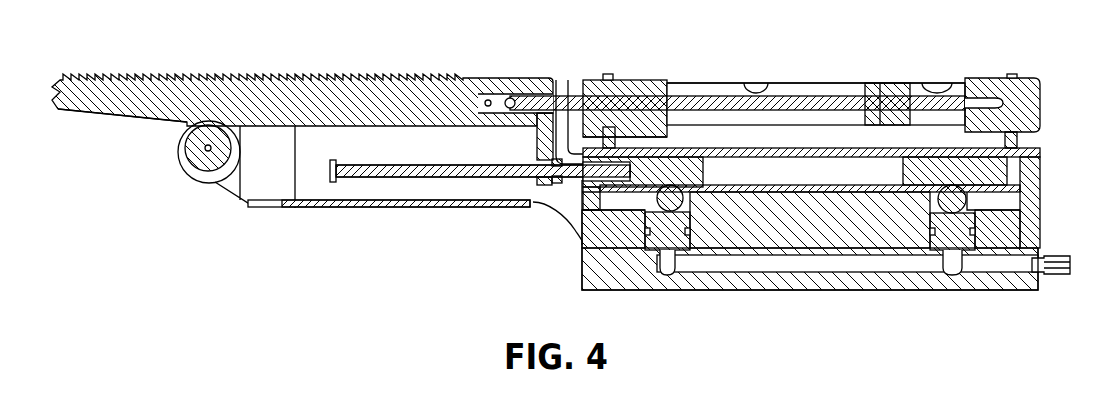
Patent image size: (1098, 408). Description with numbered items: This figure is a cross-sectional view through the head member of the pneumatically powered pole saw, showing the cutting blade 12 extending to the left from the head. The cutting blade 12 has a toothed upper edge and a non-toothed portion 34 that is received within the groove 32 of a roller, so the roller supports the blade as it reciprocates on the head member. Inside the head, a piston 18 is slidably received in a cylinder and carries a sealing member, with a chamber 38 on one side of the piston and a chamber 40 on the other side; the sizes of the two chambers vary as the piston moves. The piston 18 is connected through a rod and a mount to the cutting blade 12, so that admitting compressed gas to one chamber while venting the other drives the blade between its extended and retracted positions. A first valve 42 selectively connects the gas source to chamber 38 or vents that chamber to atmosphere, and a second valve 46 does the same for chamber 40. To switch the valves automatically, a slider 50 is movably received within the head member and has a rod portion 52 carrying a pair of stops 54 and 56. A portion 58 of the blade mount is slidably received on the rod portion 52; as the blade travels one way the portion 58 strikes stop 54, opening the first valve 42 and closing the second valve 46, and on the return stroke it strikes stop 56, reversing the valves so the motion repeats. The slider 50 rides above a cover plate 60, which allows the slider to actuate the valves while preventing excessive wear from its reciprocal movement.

The cutting blade 12 is at (195, 105).
The non-toothed portion 34 is at (150, 118).
The groove 32 is at (197, 175).
The stop 54 is at (297, 178).
The rod portion 52 is at (397, 172).
The stop 56 is at (559, 183).
The portion 58 is at (538, 136).
The slider 50 is at (677, 167).
The chamber 38 is at (768, 83).
The piston 18 is at (890, 98).
The chamber 40 is at (948, 83).
The cover plate 60 is at (787, 187).
The first valve 42 is at (648, 240).
The second valve 46 is at (958, 226).